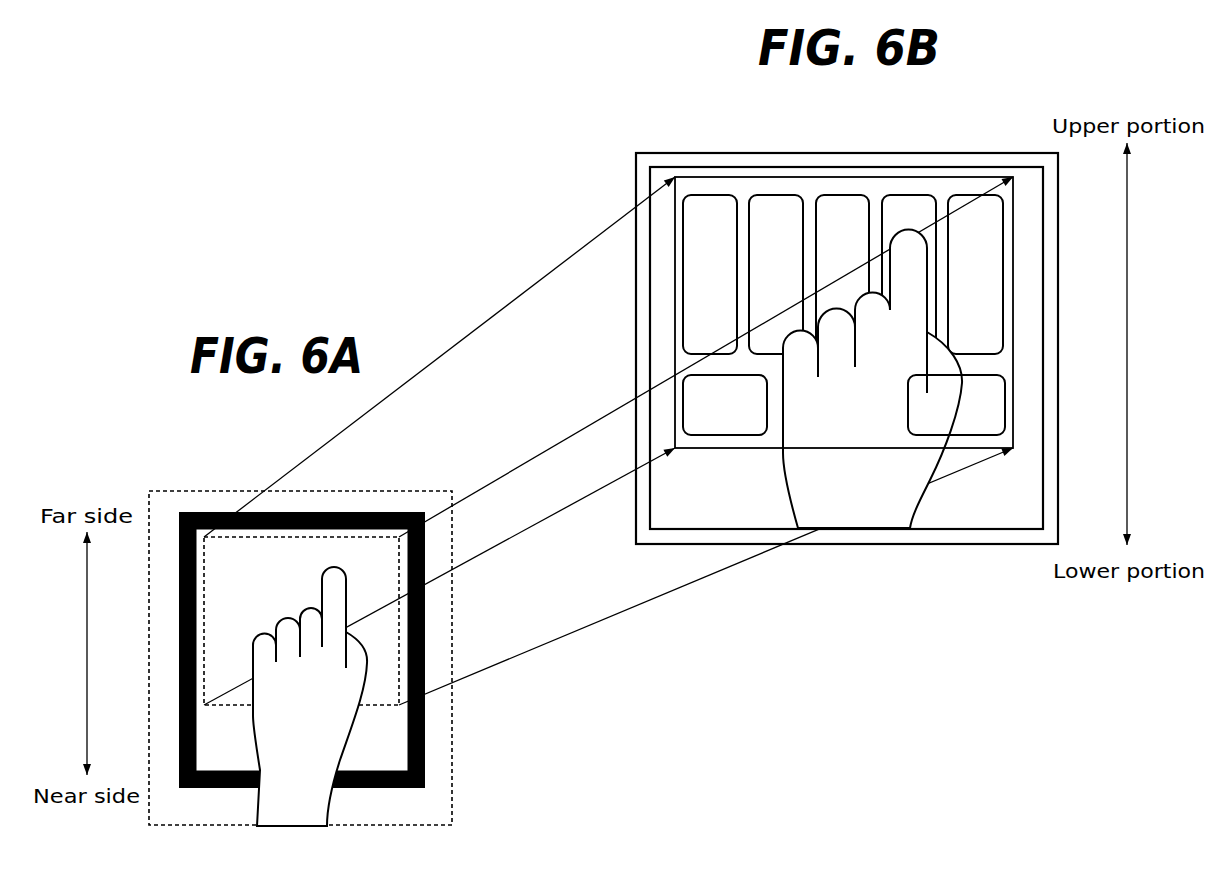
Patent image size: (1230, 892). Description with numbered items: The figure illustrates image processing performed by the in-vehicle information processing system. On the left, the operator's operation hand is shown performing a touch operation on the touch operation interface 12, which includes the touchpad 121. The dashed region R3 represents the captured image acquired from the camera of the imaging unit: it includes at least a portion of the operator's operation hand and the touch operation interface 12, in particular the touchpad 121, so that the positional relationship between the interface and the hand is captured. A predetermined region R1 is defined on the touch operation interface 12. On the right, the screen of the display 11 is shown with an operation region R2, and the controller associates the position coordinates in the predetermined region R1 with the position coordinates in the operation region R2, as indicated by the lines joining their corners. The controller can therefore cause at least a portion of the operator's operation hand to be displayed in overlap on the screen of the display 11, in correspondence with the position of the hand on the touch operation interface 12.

In FIG. 6B, the display 11 is at (933, 144).
In FIG. 6A, the touch operation interface 12 is at (207, 484).
In FIG. 6A, the touchpad 121 is at (357, 512).
In FIG. 6A, the predetermined region R1 is at (372, 707).
In FIG. 6B, the operation region R2 is at (1013, 288).
In FIG. 6A, the region R3 is at (452, 748).